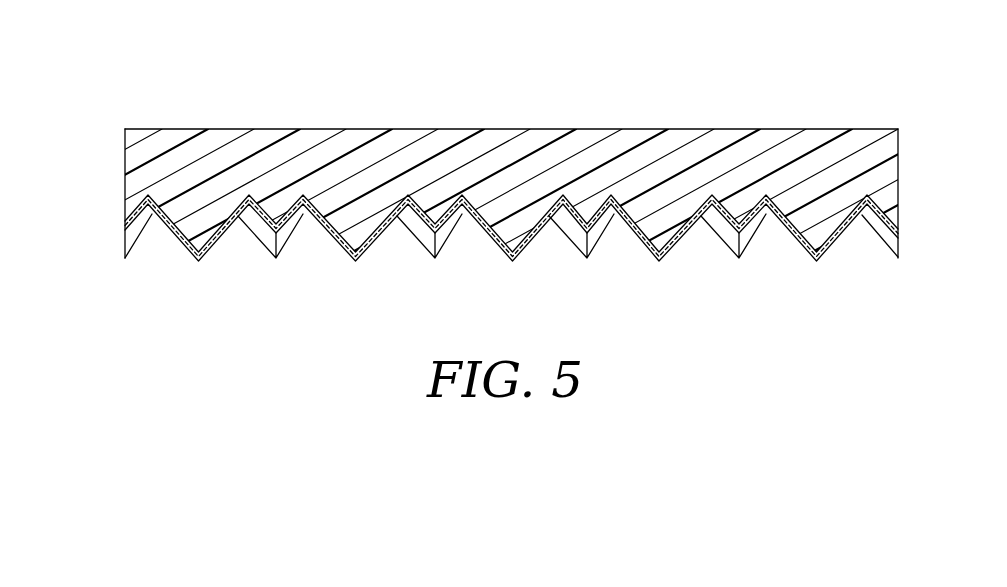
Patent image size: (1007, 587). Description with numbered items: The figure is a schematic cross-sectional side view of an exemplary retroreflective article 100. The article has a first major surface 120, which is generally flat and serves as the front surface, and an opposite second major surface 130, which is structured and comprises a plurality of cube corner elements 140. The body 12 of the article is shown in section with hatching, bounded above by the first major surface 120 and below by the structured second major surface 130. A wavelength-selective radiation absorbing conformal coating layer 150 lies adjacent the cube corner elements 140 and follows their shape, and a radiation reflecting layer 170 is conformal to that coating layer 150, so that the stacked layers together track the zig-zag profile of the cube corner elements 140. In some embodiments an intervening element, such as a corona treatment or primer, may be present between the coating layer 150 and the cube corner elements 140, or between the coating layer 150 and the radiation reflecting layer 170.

The retroreflective article 100 is at (893, 60).
The substrate body 12 is at (807, 150).
The first major surface 120 is at (503, 128).
The second major surface 130 is at (884, 223).
The cube corner elements 140 is at (357, 224).
The wavelength-selective radiation absorbing conformal coating layer 150 is at (522, 241).
The radiation reflecting layer 170 is at (141, 220).